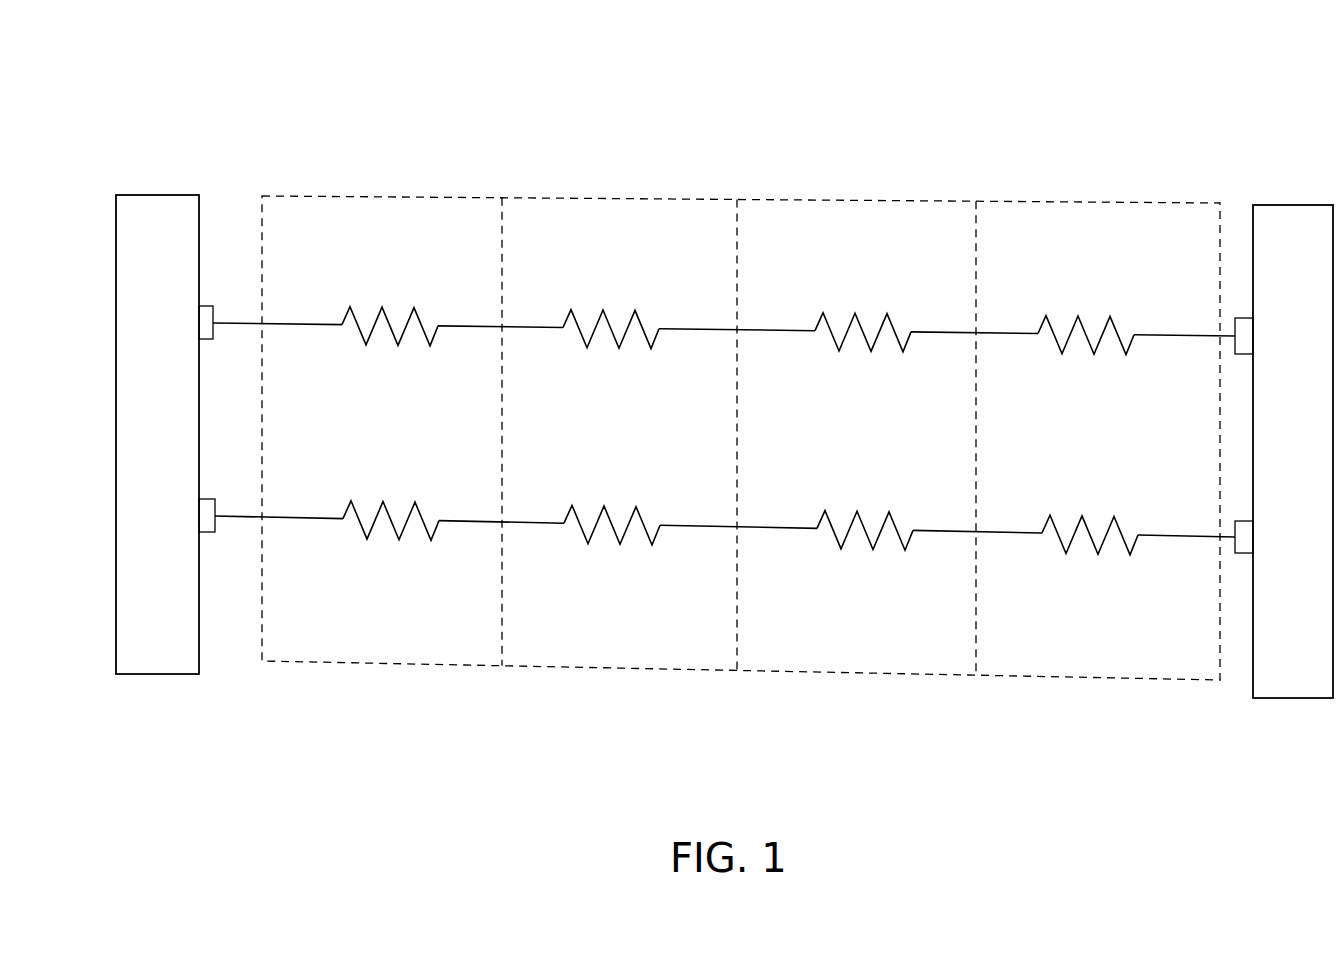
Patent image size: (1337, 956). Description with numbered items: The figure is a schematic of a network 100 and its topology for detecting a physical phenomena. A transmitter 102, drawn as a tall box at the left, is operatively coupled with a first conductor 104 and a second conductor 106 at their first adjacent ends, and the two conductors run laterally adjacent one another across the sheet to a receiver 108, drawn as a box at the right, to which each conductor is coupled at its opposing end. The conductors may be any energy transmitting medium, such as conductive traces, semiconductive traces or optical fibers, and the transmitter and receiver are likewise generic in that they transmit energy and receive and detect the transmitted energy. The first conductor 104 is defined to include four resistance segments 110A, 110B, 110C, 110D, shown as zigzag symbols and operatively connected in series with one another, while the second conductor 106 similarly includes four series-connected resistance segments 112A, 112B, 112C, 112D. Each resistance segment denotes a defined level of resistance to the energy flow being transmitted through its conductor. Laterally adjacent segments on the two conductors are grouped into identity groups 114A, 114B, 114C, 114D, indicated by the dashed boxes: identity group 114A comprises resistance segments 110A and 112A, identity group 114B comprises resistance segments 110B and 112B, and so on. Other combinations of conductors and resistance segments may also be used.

The network 100 is at (1012, 150).
The transmitter 102 is at (181, 195).
The first conductor 104 is at (247, 323).
The second conductor 106 is at (247, 516).
The receiver 108 is at (1302, 700).
The resistance segment 110A is at (376, 310).
The resistance segment 110B is at (596, 318).
The resistance segment 110C is at (848, 318).
The resistance segment 110D is at (1072, 330).
The resistance segment 112A is at (388, 520).
The resistance segment 112B is at (608, 525).
The resistance segment 112C is at (860, 532).
The resistance segment 112D is at (1090, 540).
The identity group 114A is at (410, 667).
The identity group 114B is at (657, 672).
The identity group 114C is at (898, 677).
The identity group 114D is at (1120, 682).